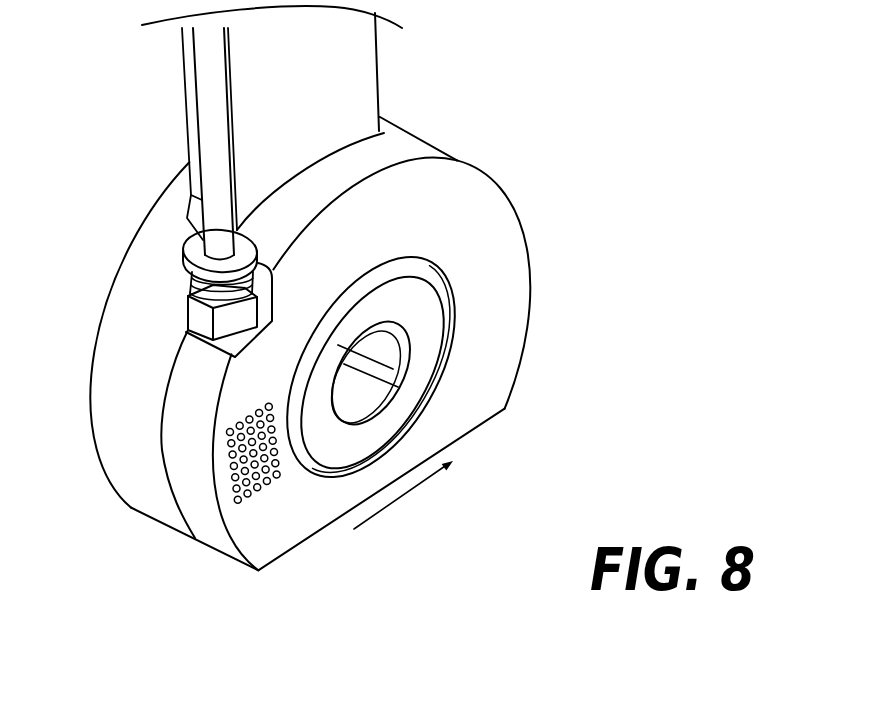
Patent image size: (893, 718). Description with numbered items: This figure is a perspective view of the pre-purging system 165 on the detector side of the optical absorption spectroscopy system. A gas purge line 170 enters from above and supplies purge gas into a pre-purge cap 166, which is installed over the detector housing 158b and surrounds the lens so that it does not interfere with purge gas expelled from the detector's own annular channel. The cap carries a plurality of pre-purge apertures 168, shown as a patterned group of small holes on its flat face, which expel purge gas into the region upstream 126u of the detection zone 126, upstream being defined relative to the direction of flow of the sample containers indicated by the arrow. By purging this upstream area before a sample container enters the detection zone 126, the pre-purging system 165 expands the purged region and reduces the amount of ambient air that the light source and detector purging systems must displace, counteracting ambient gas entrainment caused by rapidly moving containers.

The pre-purging system 165 is at (550, 212).
The detector housing 158b is at (122, 370).
The detection zone 126 is at (472, 484).
The region upstream of the detection zone 126u is at (320, 552).
The pre-purge cap 166 is at (487, 368).
The gas purge line 170 is at (208, 107).
The pre-purge apertures 168 is at (236, 498).